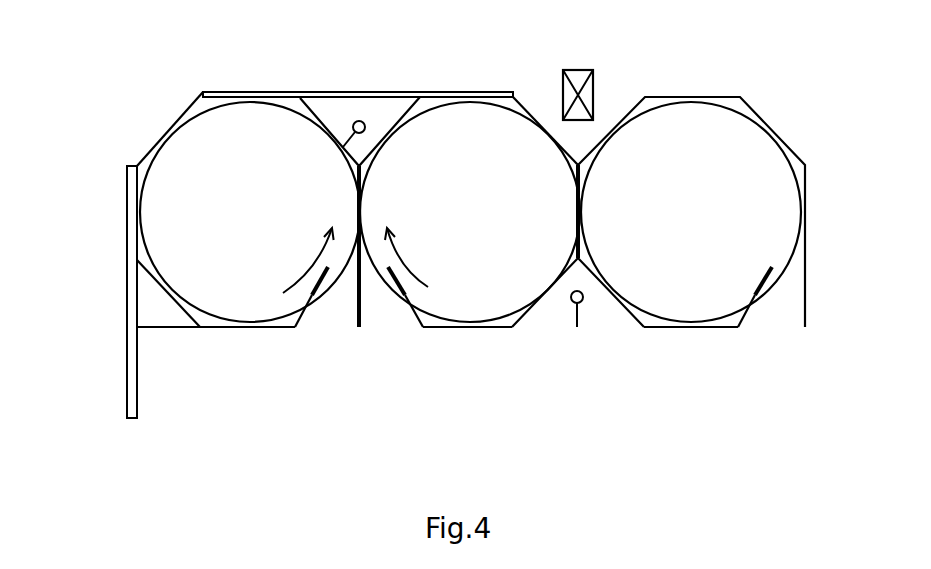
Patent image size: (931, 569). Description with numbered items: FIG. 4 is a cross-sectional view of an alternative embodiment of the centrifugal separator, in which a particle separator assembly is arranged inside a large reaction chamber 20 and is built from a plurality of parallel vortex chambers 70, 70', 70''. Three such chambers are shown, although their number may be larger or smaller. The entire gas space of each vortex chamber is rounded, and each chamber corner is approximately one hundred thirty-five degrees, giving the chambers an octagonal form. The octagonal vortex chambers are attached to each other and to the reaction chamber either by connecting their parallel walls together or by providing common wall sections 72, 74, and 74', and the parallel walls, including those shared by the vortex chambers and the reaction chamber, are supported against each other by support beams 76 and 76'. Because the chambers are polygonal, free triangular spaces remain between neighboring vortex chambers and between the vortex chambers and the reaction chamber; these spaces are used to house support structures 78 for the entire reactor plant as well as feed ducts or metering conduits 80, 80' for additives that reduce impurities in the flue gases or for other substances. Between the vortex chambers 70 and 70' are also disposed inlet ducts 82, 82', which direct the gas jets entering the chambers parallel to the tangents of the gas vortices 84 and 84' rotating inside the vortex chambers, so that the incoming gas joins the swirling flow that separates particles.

The reaction chamber 20 is at (545, 430).
The vortex chamber 70 is at (250, 169).
The vortex chamber 70' is at (470, 169).
The vortex chamber 70'' is at (691, 173).
The common wall section 72 is at (238, 330).
The common wall section 74 is at (360, 212).
The common wall section 74' is at (581, 246).
The support beam 76 is at (358, 57).
The support beam 76' is at (98, 292).
The support structure 78 is at (577, 83).
The feed duct or metering conduit 80 is at (376, 92).
The feed duct or metering conduit 80' is at (607, 334).
The inlet duct 82 is at (319, 324).
The inlet duct 82' is at (576, 324).
The gas vortex 84 is at (297, 260).
The gas vortex 84' is at (431, 257).